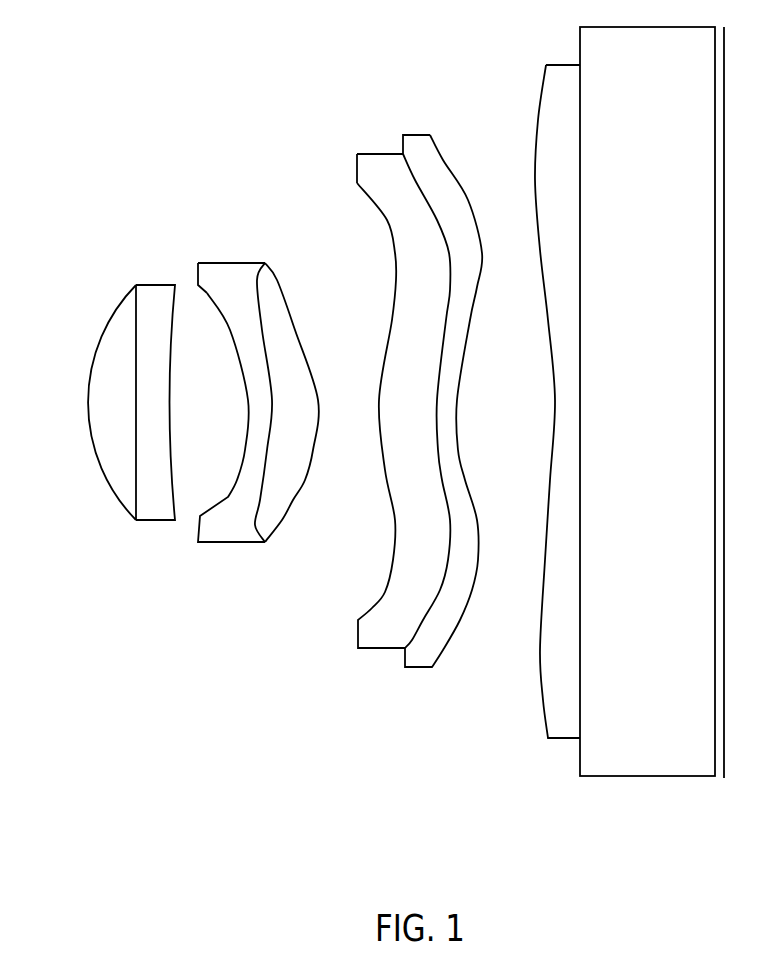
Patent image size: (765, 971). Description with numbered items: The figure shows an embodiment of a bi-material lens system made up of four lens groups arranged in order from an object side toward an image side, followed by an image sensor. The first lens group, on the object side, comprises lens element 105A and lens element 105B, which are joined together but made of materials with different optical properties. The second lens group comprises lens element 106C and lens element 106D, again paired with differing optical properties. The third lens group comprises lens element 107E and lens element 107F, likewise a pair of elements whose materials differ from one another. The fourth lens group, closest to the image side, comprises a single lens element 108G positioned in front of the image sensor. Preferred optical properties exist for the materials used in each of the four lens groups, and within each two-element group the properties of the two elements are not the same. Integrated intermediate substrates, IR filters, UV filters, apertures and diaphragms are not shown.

The lens element A 105A is at (102, 453).
The lens element B 105B is at (148, 521).
The lens element C 106C is at (225, 543).
The lens element D 106D is at (274, 505).
The lens element E 107E is at (378, 640).
The lens element F 107F is at (420, 662).
The lens element G 108G is at (548, 698).